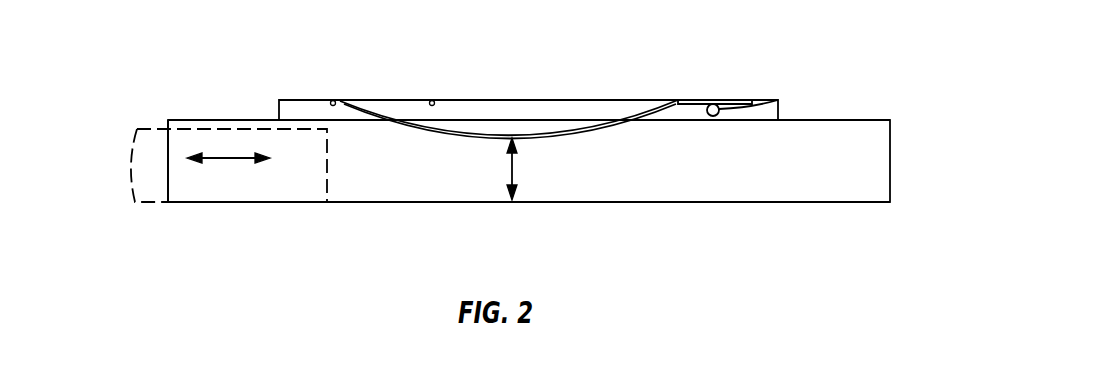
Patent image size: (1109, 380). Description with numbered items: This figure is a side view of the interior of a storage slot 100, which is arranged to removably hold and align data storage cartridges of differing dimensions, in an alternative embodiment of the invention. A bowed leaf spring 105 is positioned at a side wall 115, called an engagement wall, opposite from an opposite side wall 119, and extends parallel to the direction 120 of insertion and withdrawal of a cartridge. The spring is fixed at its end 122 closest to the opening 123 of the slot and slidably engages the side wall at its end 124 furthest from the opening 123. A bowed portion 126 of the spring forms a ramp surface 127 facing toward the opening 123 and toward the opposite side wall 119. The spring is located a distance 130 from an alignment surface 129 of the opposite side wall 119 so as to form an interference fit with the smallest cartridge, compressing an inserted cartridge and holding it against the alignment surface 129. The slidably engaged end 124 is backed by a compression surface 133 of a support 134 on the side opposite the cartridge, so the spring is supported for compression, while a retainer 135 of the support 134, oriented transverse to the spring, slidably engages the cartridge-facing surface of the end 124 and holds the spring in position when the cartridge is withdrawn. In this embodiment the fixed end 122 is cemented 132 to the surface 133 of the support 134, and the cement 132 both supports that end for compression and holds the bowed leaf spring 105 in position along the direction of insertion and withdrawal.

The storage slot 100 is at (848, 53).
The bowed leaf spring 105 is at (553, 137).
The side wall 115 is at (797, 120).
The opposite side wall 119 is at (745, 202).
The direction of insertion and withdrawal 120 is at (225, 157).
The fixed end 122 is at (347, 102).
The opening 123 is at (168, 121).
The slidably engaged end 124 is at (692, 107).
The bowed portion 126 is at (448, 133).
The ramp surface 127 is at (413, 132).
The alignment surface 129 is at (608, 202).
The distance 130 is at (510, 170).
The cement 132 is at (337, 93).
The compression surface 133 is at (437, 94).
The support 134 is at (553, 97).
The retainer 135 is at (778, 100).